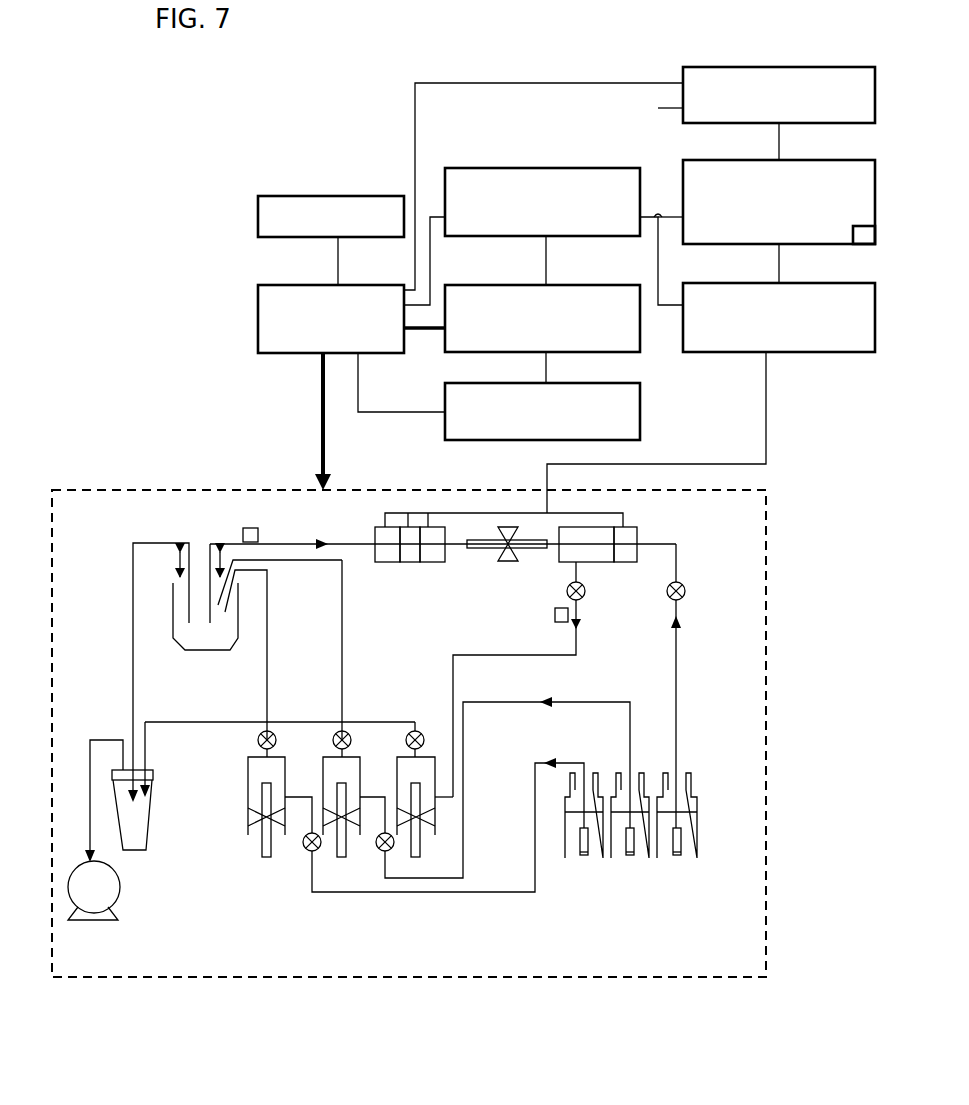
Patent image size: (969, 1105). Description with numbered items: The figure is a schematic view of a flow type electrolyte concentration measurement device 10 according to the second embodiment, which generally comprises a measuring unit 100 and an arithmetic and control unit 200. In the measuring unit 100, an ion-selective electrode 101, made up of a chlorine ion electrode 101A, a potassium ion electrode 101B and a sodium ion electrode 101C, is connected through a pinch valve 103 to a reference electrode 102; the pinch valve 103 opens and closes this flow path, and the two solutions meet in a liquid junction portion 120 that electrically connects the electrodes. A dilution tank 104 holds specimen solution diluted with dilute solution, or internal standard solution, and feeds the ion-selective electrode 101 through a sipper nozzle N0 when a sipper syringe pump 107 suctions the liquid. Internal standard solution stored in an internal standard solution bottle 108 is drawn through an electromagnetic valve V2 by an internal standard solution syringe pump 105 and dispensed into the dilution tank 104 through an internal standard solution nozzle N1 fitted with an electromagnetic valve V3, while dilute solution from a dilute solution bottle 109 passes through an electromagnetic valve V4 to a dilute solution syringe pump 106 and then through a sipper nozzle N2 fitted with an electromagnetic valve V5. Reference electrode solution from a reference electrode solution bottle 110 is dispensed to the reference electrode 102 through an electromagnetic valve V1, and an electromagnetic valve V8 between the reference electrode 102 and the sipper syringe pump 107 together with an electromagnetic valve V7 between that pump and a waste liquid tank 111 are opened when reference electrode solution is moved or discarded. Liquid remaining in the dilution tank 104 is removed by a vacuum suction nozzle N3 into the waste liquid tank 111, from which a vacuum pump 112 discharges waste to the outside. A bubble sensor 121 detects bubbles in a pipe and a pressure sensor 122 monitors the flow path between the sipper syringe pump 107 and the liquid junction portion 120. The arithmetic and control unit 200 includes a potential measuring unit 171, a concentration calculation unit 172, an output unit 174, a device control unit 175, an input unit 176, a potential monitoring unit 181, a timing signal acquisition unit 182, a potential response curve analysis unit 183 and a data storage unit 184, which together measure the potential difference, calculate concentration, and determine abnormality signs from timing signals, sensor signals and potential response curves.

The electrolyte concentration measurement device 10 is at (48, 265).
The measuring unit 100 is at (52, 488).
The arithmetic and control unit 200 is at (254, 132).
The ion-selective electrode 101 is at (412, 578).
The chlorine ion electrode 101A is at (388, 563).
The potassium ion electrode 101B is at (412, 563).
The sodium ion electrode 101C is at (448, 563).
The reference electrode 102 is at (627, 563).
The pinch valve 103 is at (510, 563).
The dilution tank 104 is at (201, 651).
The internal standard solution syringe pump 105 is at (265, 858).
The dilute solution syringe pump 106 is at (340, 858).
The sipper syringe pump 107 is at (420, 852).
The internal standard solution bottle 108 is at (586, 860).
The dilute solution bottle 109 is at (632, 860).
The reference electrode solution bottle 110 is at (679, 860).
The waste liquid tank 111 is at (146, 835).
The vacuum pump 112 is at (96, 922).
The liquid junction portion 120 is at (600, 563).
The bubble sensor 121 is at (258, 530).
The pressure sensor 122 is at (555, 613).
The potential measuring unit 171 is at (593, 383).
The concentration calculation unit 172 is at (593, 285).
The output unit 174 is at (593, 168).
The device control unit 175 is at (352, 285).
The input unit 176 is at (352, 196).
The potential monitoring unit 181 is at (830, 352).
The timing signal acquisition unit 182 is at (830, 67).
The potential response curve analysis unit 183 is at (830, 160).
The data storage unit 184 is at (863, 244).
The sipper nozzle N0 is at (210, 540).
The internal standard solution nozzle N1 is at (267, 609).
The sipper nozzle N2 is at (342, 651).
The vacuum suction nozzle N3 is at (133, 627).
The electromagnetic valve V1 is at (684, 599).
The electromagnetic valve V2 is at (305, 849).
The electromagnetic valve V3 is at (277, 740).
The electromagnetic valve V4 is at (378, 849).
The electromagnetic valve V5 is at (352, 740).
The electromagnetic valve V7 is at (421, 732).
The electromagnetic valve V8 is at (584, 599).